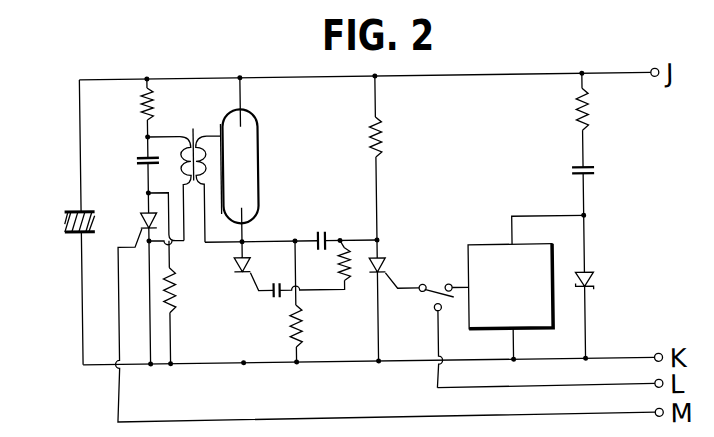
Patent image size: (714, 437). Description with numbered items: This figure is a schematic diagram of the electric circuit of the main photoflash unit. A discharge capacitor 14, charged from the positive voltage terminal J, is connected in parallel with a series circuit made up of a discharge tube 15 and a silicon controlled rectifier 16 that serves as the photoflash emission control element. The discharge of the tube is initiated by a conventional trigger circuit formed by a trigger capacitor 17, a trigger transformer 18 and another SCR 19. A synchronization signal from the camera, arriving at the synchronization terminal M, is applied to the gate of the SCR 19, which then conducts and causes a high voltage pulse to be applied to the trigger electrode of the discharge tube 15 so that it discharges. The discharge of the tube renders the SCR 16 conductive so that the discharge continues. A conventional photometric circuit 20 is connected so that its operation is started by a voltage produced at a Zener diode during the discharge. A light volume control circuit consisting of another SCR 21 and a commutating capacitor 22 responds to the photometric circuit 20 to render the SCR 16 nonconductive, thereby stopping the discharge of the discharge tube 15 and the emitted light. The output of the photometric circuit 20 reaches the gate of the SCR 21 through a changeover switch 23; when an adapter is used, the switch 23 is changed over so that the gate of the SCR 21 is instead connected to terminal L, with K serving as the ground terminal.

The discharge capacitor 14 is at (73, 208).
The discharge tube 15 is at (259, 135).
The silicon controlled rectifier 16 is at (236, 273).
The trigger capacitor 17 is at (139, 156).
The trigger transformer 18 is at (202, 132).
The SCR 19 is at (143, 213).
The photometric circuit 20 is at (484, 246).
The SCR 21 is at (385, 256).
The commutating capacitor 22 is at (323, 231).
The changeover switch 23 is at (428, 300).